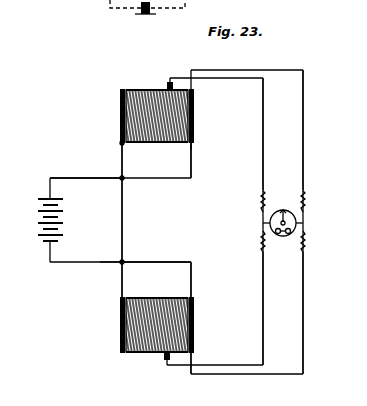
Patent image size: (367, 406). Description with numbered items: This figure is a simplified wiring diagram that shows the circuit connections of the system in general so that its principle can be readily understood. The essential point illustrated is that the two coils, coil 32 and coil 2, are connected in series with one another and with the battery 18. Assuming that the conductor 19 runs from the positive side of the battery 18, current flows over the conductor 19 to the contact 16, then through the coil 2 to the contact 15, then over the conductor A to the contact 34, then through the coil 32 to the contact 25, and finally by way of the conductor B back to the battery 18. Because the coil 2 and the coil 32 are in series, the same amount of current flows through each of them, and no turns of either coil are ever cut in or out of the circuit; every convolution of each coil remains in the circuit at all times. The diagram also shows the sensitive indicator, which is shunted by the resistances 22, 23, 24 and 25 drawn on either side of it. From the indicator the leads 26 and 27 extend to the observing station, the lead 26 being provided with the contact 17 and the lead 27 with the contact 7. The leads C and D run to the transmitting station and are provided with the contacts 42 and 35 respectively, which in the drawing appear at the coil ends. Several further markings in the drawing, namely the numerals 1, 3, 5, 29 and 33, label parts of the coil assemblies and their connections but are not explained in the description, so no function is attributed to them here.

The coil 1 is at (157, 298).
The coil 2 is at (141, 354).
The conductor 3 is at (61, 298).
The coil end plate 5 is at (193, 328).
The contact 7 is at (164, 376).
The contact 15 is at (120, 282).
The contact 16 is at (193, 280).
The contact 17 is at (194, 358).
The battery 18 is at (38, 227).
The conductor 19 is at (167, 262).
The resistance 22 is at (305, 200).
The resistance 23 is at (318, 253).
The resistance 24 is at (262, 200).
The contact 25 is at (192, 150).
The lead 26 is at (304, 355).
The lead 27 is at (264, 308).
The coil 29 is at (155, 144).
The coil 32 is at (140, 90).
The lead 33 is at (120, 128).
The contact 34 is at (120, 158).
The contact 35 is at (193, 86).
The contact 42 is at (156, 75).
The conductor A is at (122, 238).
The conductor B is at (86, 188).
The lead C is at (263, 156).
The lead D is at (304, 165).